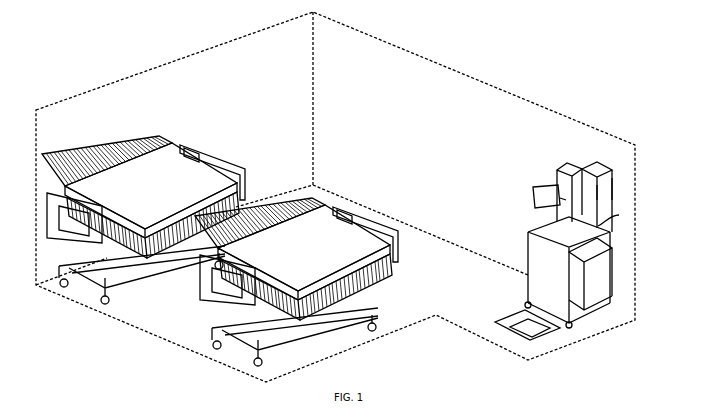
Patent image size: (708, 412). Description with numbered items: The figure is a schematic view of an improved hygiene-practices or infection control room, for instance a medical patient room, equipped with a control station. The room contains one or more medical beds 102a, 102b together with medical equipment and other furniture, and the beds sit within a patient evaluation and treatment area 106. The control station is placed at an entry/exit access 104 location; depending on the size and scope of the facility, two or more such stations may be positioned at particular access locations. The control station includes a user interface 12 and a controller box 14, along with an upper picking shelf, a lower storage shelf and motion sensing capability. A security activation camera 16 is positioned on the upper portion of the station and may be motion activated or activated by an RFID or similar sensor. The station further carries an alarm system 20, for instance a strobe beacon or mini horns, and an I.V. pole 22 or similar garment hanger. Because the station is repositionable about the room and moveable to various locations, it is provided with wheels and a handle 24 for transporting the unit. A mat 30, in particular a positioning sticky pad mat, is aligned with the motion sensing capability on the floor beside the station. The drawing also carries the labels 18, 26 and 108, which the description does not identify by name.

The user interface 12 is at (567, 232).
The controller box 14 is at (600, 333).
The security activation camera 16 is at (578, 168).
The base housing 18 is at (526, 236).
The alarm system 20 is at (600, 168).
The I.V. pole 22 is at (614, 190).
The handle 24 is at (619, 215).
The module 26 is at (574, 250).
The mat 30 is at (507, 338).
The medical bed 102a is at (72, 233).
The medical bed 102b is at (213, 300).
The entry/exit access 104 is at (596, 387).
The patient evaluation and treatment area 106 is at (166, 308).
The room space 108 is at (363, 172).